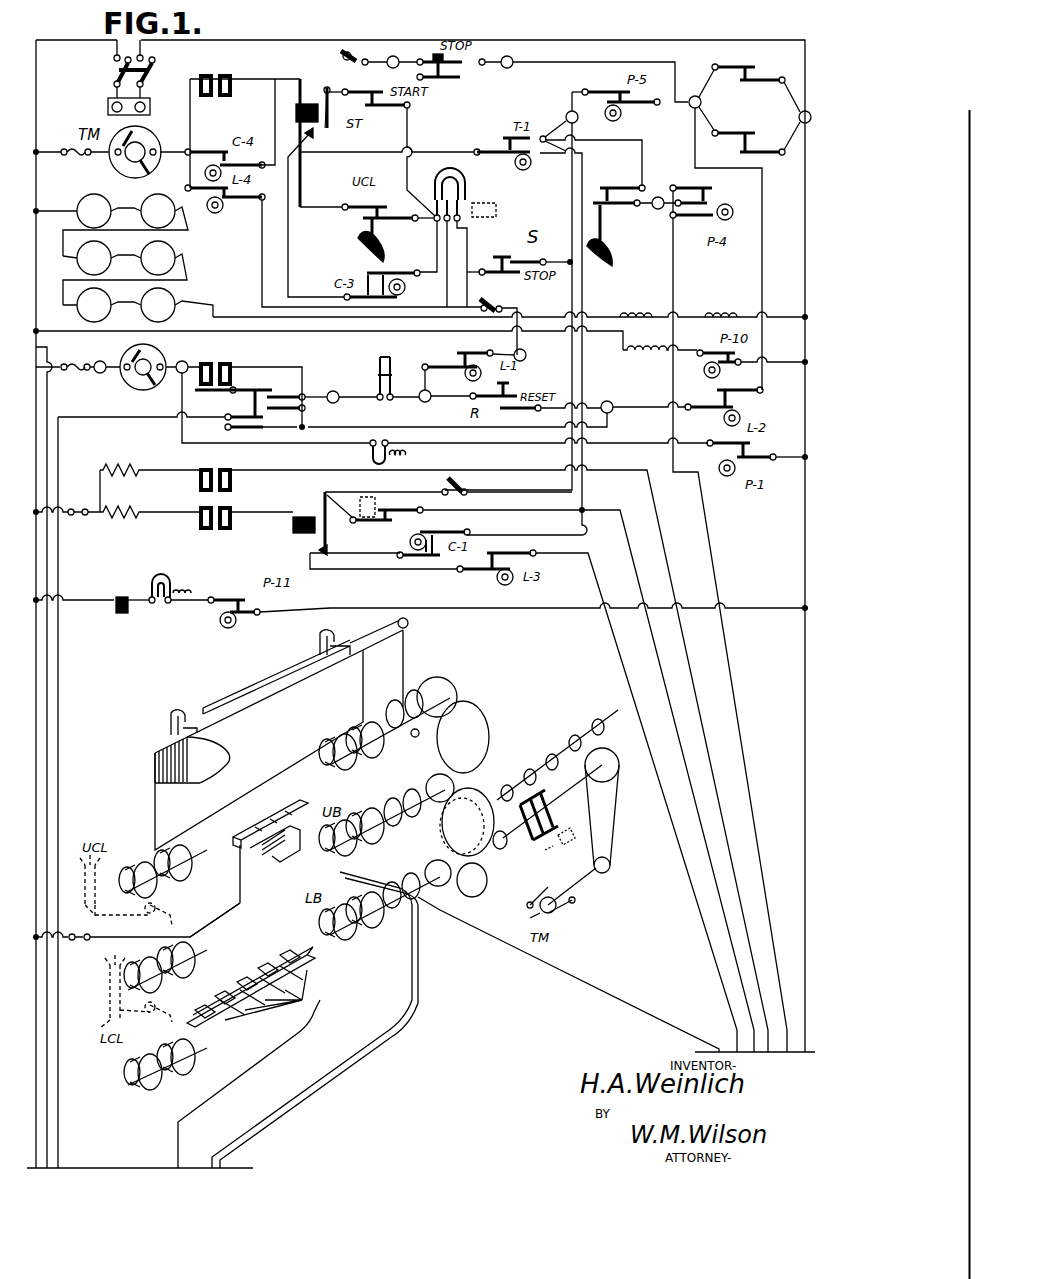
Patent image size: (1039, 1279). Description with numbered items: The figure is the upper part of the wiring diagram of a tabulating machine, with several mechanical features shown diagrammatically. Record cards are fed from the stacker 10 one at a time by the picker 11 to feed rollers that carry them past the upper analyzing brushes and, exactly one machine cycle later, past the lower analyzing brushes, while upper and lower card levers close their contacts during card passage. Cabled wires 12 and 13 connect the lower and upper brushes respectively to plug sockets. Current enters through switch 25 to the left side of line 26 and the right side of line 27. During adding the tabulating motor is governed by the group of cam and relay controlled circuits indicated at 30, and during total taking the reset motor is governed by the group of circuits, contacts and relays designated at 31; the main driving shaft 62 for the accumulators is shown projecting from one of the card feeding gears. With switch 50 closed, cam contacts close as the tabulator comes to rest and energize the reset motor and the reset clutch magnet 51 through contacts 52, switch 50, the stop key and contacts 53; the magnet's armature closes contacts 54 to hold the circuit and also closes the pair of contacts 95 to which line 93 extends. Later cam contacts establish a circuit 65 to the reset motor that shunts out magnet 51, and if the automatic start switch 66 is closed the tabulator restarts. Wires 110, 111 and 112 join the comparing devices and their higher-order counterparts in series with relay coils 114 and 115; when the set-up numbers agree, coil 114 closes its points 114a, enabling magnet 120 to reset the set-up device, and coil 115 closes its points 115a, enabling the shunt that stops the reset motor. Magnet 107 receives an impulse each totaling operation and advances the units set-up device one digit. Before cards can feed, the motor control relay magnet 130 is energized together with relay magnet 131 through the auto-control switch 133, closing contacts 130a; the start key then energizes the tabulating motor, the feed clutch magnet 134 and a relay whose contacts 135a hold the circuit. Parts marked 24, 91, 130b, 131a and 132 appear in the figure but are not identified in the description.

The stacker 10 is at (281, 734).
The picker 11 is at (267, 677).
The cabled wires 12 is at (181, 1130).
The cabled wires 13 is at (238, 1138).
The cable 24 is at (655, 655).
The switch 25 is at (145, 47).
The line 26 is at (36, 297).
The line 27 is at (803, 238).
The cam and relay controlled circuits 30 is at (387, 127).
The reset motor control circuits 31 is at (195, 376).
The auto-reset switch 50 is at (503, 304).
The reset clutch magnet 51 is at (222, 362).
The contacts 52 is at (385, 365).
The contacts 53 is at (755, 75).
The contacts 54 is at (306, 411).
The main driving shaft 62 is at (480, 870).
The circuit 65 is at (612, 452).
The automatic start switch 66 is at (352, 55).
The conductor 91 is at (42, 1112).
The line 93 is at (58, 1140).
The contacts 95 is at (270, 428).
The magnet 107 is at (640, 358).
The wire 110 is at (47, 209).
The wire 111 is at (187, 229).
The wire 112 is at (187, 270).
The relay coil 114 is at (632, 313).
The relay points 114a is at (190, 592).
The relay coil 115 is at (718, 313).
The relay points 115a is at (400, 441).
The magnet 120 is at (118, 614).
The motor control relay magnet 130 is at (498, 210).
The contacts 130a is at (465, 205).
The relay armature 130b is at (452, 180).
The relay magnet 131 is at (292, 526).
The relay armature 131a is at (343, 535).
The relay contact 132 is at (376, 506).
The auto-control switch 133 is at (443, 487).
The feed clutch magnet 134 is at (245, 119).
The contacts 135a is at (325, 130).